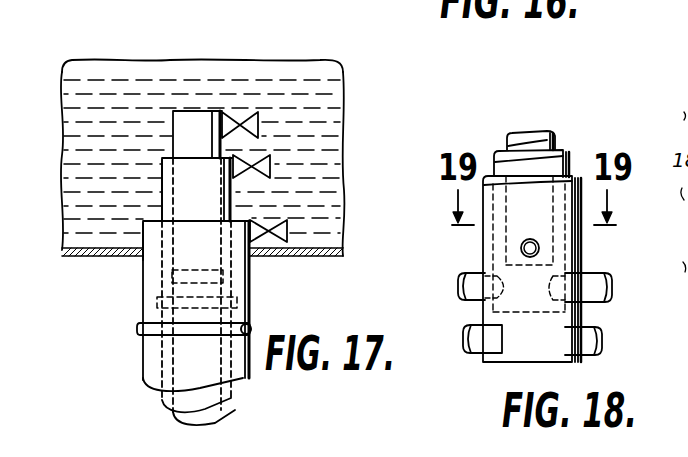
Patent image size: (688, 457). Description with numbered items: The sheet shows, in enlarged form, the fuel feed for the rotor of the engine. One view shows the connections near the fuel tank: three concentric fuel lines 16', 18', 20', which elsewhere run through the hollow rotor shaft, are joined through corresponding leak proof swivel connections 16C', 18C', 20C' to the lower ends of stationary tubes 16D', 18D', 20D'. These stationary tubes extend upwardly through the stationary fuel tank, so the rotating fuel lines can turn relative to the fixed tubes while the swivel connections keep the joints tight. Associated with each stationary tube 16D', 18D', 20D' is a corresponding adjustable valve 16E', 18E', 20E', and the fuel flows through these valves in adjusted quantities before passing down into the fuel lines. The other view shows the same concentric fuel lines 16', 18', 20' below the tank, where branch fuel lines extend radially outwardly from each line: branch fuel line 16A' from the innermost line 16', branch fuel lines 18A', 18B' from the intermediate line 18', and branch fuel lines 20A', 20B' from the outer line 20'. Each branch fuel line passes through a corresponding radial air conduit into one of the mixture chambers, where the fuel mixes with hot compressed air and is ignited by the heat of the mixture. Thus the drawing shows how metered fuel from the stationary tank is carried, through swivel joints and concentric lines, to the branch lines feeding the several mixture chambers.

In FIG. 17, the fuel line 16' is at (227, 268).
In FIG. 18, the fuel line 16' is at (551, 119).
In FIG. 17, the stationary tube 16D' is at (204, 65).
In FIG. 17, the leak proof swivel connection 16C' is at (247, 275).
In FIG. 17, the adjustable valve 16E' is at (288, 89).
In FIG. 17, the fuel line 18' is at (175, 292).
In FIG. 18, the fuel line 18' is at (557, 191).
In FIG. 17, the stationary tube 18D' is at (111, 221).
In FIG. 17, the leak proof swivel connection 18C' is at (161, 310).
In FIG. 17, the adjustable valve 18E' is at (313, 147).
In FIG. 17, the fuel line 20' is at (173, 306).
In FIG. 18, the fuel line 20' is at (561, 269).
In FIG. 17, the stationary tube 20D' is at (120, 260).
In FIG. 17, the leak proof swivel connection 20C' is at (274, 313).
In FIG. 17, the adjustable valve 20E' is at (325, 208).
In FIG. 18, the branch fuel line 16A' is at (491, 245).
In FIG. 18, the branch fuel line 18B' is at (457, 279).
In FIG. 18, the branch fuel line 20B' is at (470, 363).
In FIG. 18, the branch fuel line 18A' is at (609, 298).
In FIG. 18, the branch fuel line 20A' is at (613, 353).